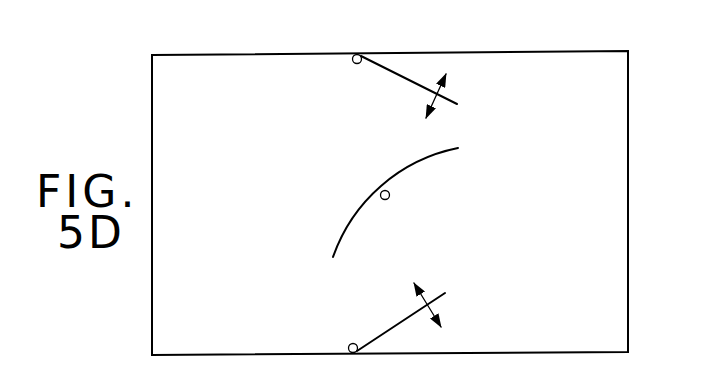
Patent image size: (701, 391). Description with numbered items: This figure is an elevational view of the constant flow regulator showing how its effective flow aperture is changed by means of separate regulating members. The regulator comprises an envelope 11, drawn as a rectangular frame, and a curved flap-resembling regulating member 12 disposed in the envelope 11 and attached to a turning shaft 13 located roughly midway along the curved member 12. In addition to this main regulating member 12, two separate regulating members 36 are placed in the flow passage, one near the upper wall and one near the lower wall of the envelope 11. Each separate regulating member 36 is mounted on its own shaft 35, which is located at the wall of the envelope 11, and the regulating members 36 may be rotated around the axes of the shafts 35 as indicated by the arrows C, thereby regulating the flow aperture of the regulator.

The envelope 11 is at (316, 53).
The regulating member 12 is at (440, 155).
The turning shaft 13 is at (381, 191).
The shaft 35 is at (355, 63).
The separate regulating member 36 is at (402, 77).
The arrows C is at (444, 88).